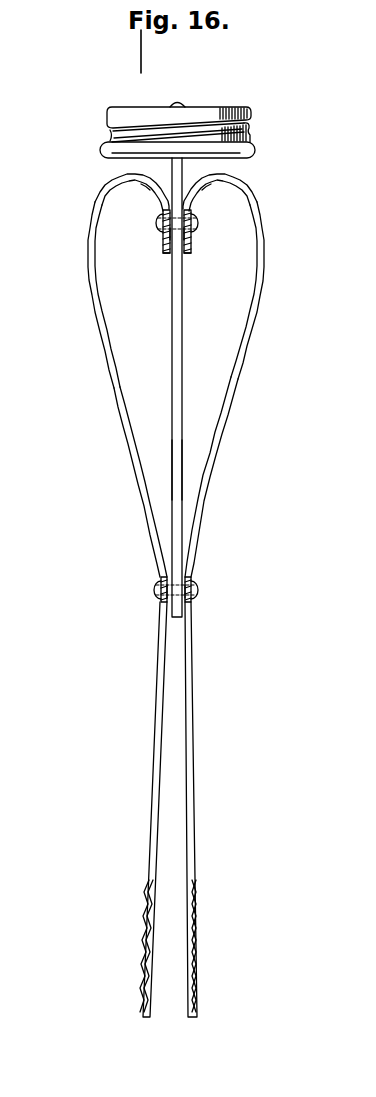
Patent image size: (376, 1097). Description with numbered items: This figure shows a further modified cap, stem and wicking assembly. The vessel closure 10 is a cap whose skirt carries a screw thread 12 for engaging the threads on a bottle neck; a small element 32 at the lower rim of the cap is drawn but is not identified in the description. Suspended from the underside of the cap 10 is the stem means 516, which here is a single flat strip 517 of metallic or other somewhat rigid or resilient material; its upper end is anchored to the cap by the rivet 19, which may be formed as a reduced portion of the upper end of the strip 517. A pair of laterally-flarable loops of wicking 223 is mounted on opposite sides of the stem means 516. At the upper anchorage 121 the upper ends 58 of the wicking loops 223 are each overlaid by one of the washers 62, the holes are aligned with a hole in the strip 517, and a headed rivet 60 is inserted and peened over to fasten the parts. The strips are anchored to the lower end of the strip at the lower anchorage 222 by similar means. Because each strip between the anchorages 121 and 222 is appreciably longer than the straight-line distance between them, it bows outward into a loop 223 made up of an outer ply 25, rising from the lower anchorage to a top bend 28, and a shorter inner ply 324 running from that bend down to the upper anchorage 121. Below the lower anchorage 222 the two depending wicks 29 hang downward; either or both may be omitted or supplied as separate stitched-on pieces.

The vessel closure 10 is at (250, 110).
The screw thread 12 is at (250, 127).
The rivet 19 is at (178, 103).
The outer ply 25 is at (115, 419).
The top bend 28 is at (117, 179).
The depending wicks 29 is at (155, 762).
The cap rim flange 32 is at (257, 159).
The upper ends of the wicking loops 58 is at (166, 254).
The headed rivet 60 is at (158, 224).
The washers 62 is at (164, 237).
The upper anchorage 121 is at (199, 227).
The lower anchorage 222 is at (204, 577).
The laterally-flarable loop of wicking 223 is at (89, 336).
The inner ply 324 is at (150, 191).
The stem means 516 is at (185, 432).
The flat strip 517 is at (181, 333).